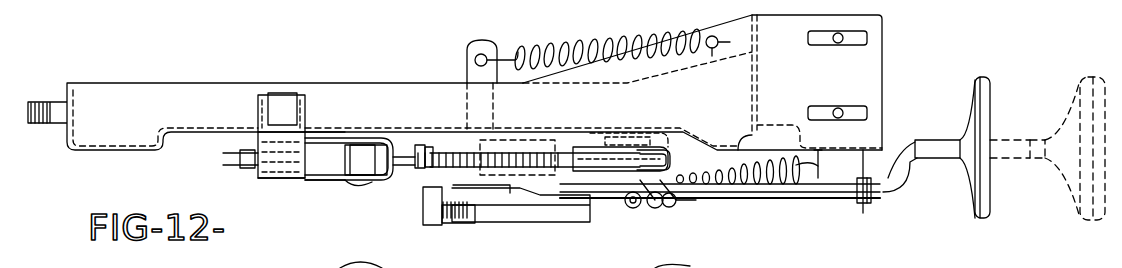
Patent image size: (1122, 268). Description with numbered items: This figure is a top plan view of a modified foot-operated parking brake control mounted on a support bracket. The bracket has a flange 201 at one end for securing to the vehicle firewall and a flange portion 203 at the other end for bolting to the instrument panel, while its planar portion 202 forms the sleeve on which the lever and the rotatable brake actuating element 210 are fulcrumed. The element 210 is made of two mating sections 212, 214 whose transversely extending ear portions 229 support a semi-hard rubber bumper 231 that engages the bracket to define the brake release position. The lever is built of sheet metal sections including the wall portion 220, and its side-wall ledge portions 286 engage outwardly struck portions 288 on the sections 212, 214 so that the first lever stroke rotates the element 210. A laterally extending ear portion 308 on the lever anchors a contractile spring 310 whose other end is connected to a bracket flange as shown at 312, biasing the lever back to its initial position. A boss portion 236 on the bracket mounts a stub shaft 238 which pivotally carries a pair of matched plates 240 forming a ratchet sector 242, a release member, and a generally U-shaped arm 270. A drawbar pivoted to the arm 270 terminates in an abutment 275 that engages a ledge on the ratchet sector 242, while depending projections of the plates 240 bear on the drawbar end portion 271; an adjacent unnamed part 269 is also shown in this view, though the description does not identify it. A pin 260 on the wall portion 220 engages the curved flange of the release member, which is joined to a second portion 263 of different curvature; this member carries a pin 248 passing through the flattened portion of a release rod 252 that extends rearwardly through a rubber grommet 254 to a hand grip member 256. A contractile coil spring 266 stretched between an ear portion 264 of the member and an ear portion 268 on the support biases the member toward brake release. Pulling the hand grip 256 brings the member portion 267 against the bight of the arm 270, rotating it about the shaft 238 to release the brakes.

The flange 201 is at (67, 87).
The planar portion 202 is at (216, 133).
The flange portion 203 is at (812, 76).
The ear portion 308 is at (467, 52).
The contractile spring 310 is at (596, 40).
The spring connection on support bracket flange 312 is at (710, 35).
The ear portions 229 is at (290, 94).
The bumper 231 is at (258, 100).
The section 212 is at (310, 183).
The section 214 is at (323, 135).
The rotatable brake actuating element 210 is at (338, 138).
The sheet metal section 220 is at (386, 183).
The outwardly struck portions 288 is at (340, 183).
The ledge portions 286 is at (342, 186).
The abutment 275 is at (424, 136).
The ratchet sector 242 is at (448, 148).
The plates 240 is at (551, 115).
The end portion of the drawbar 271 is at (592, 146).
The stub shaft 238 is at (640, 120).
The boss portion 236 is at (650, 141).
The rack end 269 is at (670, 160).
The pin 260 is at (423, 216).
The pin 248 is at (476, 221).
The second portion 263 is at (512, 218).
The ear portion 264 is at (632, 208).
The portion of member 267 is at (662, 202).
The arm 270 is at (684, 199).
The release rod 252 is at (806, 196).
The contractile coil spring 266 is at (758, 186).
The ear portion 268 is at (820, 170).
The grommet 254 is at (872, 200).
The hand grip member 256 is at (968, 97).